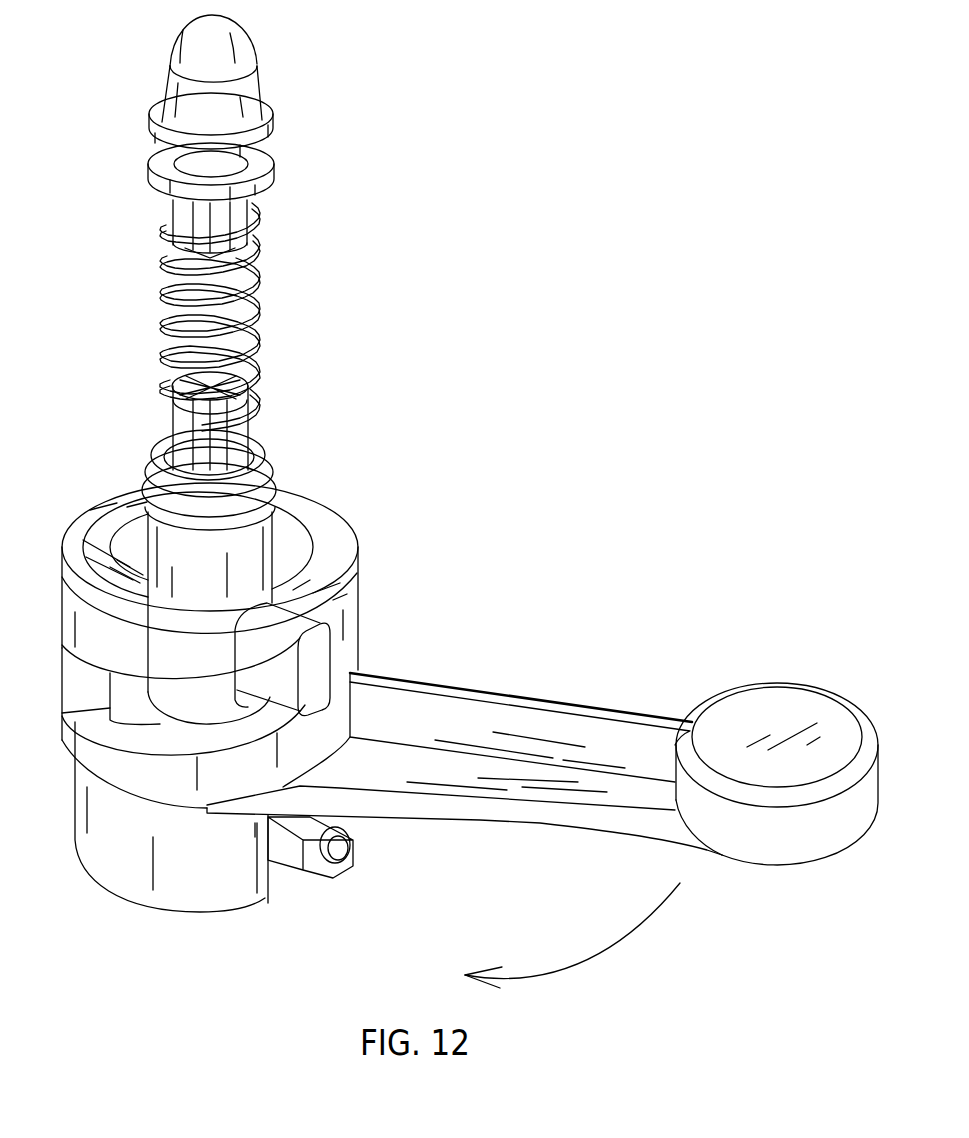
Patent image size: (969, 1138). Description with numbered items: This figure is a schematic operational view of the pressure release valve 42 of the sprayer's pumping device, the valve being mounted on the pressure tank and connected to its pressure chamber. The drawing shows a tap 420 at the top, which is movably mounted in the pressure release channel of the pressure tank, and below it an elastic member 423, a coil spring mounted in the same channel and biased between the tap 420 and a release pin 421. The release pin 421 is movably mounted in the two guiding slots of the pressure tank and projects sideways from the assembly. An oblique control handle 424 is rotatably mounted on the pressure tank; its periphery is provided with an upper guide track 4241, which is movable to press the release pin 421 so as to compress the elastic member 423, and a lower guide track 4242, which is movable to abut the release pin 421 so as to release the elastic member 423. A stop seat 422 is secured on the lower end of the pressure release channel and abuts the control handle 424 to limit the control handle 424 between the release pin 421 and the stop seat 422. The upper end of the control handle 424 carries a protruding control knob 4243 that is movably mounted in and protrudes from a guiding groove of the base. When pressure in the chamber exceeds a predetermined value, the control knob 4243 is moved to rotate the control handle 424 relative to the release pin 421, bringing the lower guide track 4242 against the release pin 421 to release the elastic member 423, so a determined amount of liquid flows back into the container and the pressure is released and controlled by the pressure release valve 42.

The pressure release valve 42 is at (537, 353).
The tap 420 is at (250, 100).
The release pin 421 is at (313, 675).
The stop seat 422 is at (105, 833).
The elastic member 423 is at (253, 303).
The oblique control handle 424 is at (178, 780).
The upper guide track 4241 is at (290, 695).
The lower guide track 4242 is at (63, 645).
The control knob 4243 is at (773, 713).